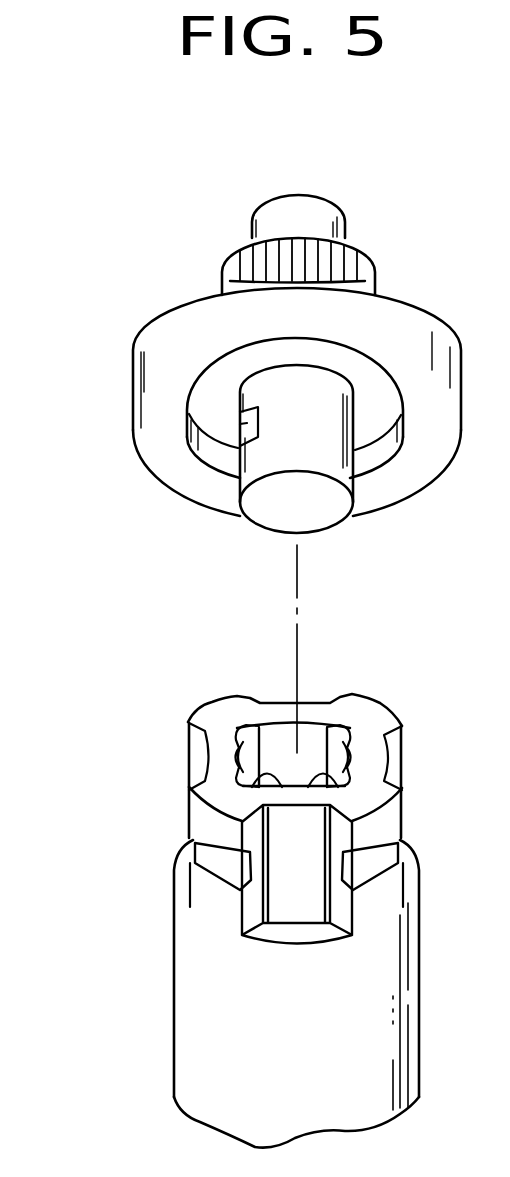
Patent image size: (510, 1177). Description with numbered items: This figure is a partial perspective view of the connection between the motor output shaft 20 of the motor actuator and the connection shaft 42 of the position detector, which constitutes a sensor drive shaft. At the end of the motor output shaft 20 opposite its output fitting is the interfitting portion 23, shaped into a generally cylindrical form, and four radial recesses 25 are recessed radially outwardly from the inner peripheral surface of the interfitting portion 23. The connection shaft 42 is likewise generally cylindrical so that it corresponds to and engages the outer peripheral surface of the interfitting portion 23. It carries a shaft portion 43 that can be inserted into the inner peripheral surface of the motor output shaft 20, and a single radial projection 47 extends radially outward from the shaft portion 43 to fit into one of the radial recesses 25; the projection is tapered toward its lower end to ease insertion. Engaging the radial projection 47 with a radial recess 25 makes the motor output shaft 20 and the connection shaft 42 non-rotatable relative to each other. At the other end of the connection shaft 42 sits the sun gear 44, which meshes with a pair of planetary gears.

The motor output shaft 20 is at (173, 972).
The interfitting portion 23 is at (385, 707).
The radial recesses 25 is at (247, 731).
The connection shaft 42 is at (132, 386).
The shaft portion 43 is at (323, 515).
The sun gear 44 is at (247, 267).
The radial projection 47 is at (242, 427).